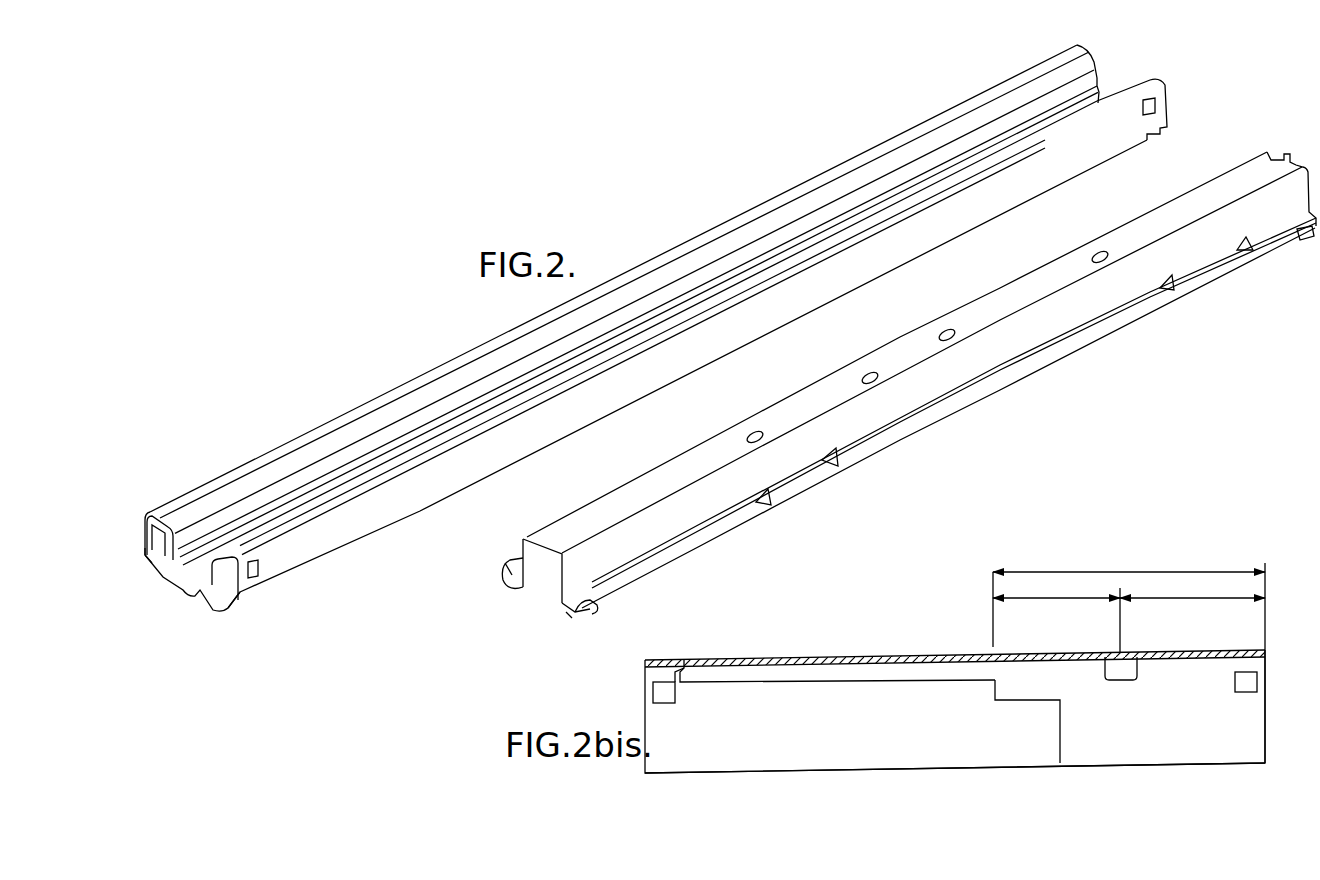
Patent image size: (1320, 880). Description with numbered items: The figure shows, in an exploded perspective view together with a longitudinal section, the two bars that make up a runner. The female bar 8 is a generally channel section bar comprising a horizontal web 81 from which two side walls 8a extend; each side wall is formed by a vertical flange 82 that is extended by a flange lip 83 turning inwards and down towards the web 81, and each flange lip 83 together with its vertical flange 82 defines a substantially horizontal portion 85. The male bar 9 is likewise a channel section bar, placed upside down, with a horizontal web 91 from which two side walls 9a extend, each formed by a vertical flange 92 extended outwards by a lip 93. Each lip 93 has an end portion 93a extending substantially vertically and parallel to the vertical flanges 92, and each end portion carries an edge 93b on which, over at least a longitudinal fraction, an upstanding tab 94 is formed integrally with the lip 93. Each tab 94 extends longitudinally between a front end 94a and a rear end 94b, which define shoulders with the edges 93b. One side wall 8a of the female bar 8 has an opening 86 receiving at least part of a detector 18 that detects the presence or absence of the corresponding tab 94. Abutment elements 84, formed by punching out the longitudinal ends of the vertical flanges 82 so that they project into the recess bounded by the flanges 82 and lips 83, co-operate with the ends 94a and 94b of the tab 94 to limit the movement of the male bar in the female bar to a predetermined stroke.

In FIG. 2, the female bar 8 is at (686, 353).
In FIG. 2bis, the female bar 8 is at (957, 669).
In FIG. 2, the side walls 8a is at (142, 536).
In FIG. 2bis, the side walls 8a is at (1268, 725).
In FIG. 2, the horizontal web 81 is at (180, 598).
In FIG. 2bis, the horizontal web 81 is at (1168, 764).
In FIG. 2, the vertical flange 82 is at (144, 558).
In FIG. 2, the flange lip 83 is at (212, 575).
In FIG. 2, the abutment elements 84 is at (325, 352).
In FIG. 2bis, the abutment elements 84 is at (662, 689).
In FIG. 2, the horizontal portion 85 is at (268, 456).
In FIG. 2bis, the horizontal portion 85 is at (925, 657).
In FIG. 2bis, the opening 86 is at (1113, 647).
In FIG. 2bis, the detector 18 is at (1126, 651).
In FIG. 2, the male bar 9 is at (885, 404).
In FIG. 2bis, the male bar 9 is at (846, 699).
In FIG. 2, the side walls 9a is at (504, 556).
In FIG. 2, the horizontal web 91 is at (546, 542).
In FIG. 2, the vertical flange 92 is at (551, 597).
In FIG. 2, the lip 93 is at (505, 567).
In FIG. 2, the end portion 93a is at (812, 488).
In FIG. 2, the edge 93b is at (762, 492).
In FIG. 2, the upstanding tab 94 is at (1173, 279).
In FIG. 2bis, the upstanding tab 94 is at (959, 677).
In FIG. 2, the front end 94a is at (839, 464).
In FIG. 2bis, the front end 94a is at (998, 685).
In FIG. 2, the rear end 94b is at (1250, 244).
In FIG. 2bis, the rear end 94b is at (681, 670).